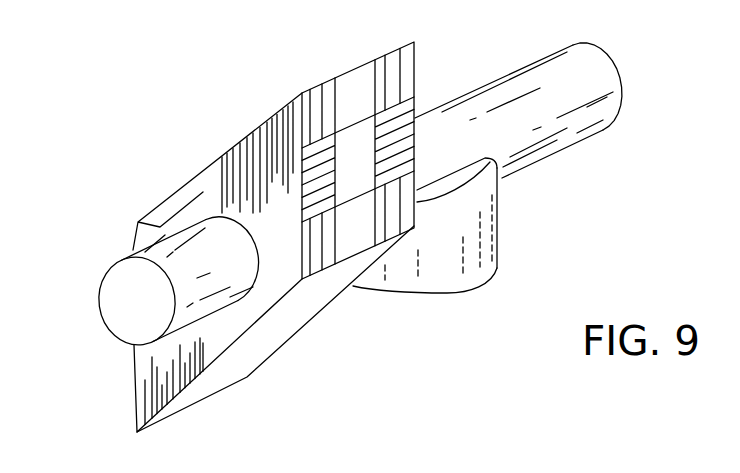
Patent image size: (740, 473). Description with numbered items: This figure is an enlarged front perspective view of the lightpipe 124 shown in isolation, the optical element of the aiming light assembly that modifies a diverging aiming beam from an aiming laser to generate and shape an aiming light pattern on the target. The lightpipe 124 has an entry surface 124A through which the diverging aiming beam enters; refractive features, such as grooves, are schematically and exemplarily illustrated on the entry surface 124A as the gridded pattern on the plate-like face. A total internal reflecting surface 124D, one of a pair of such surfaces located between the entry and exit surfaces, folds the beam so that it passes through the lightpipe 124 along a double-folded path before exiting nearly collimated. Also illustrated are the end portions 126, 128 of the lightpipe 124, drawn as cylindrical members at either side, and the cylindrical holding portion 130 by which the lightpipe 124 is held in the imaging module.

The lightpipe 124 is at (138, 93).
The entry surface 124A is at (357, 220).
The total internal reflecting surface 124D is at (263, 343).
The end portion 126 is at (135, 295).
The end portion 128 is at (562, 133).
The cylindrical holding portion 130 is at (472, 263).